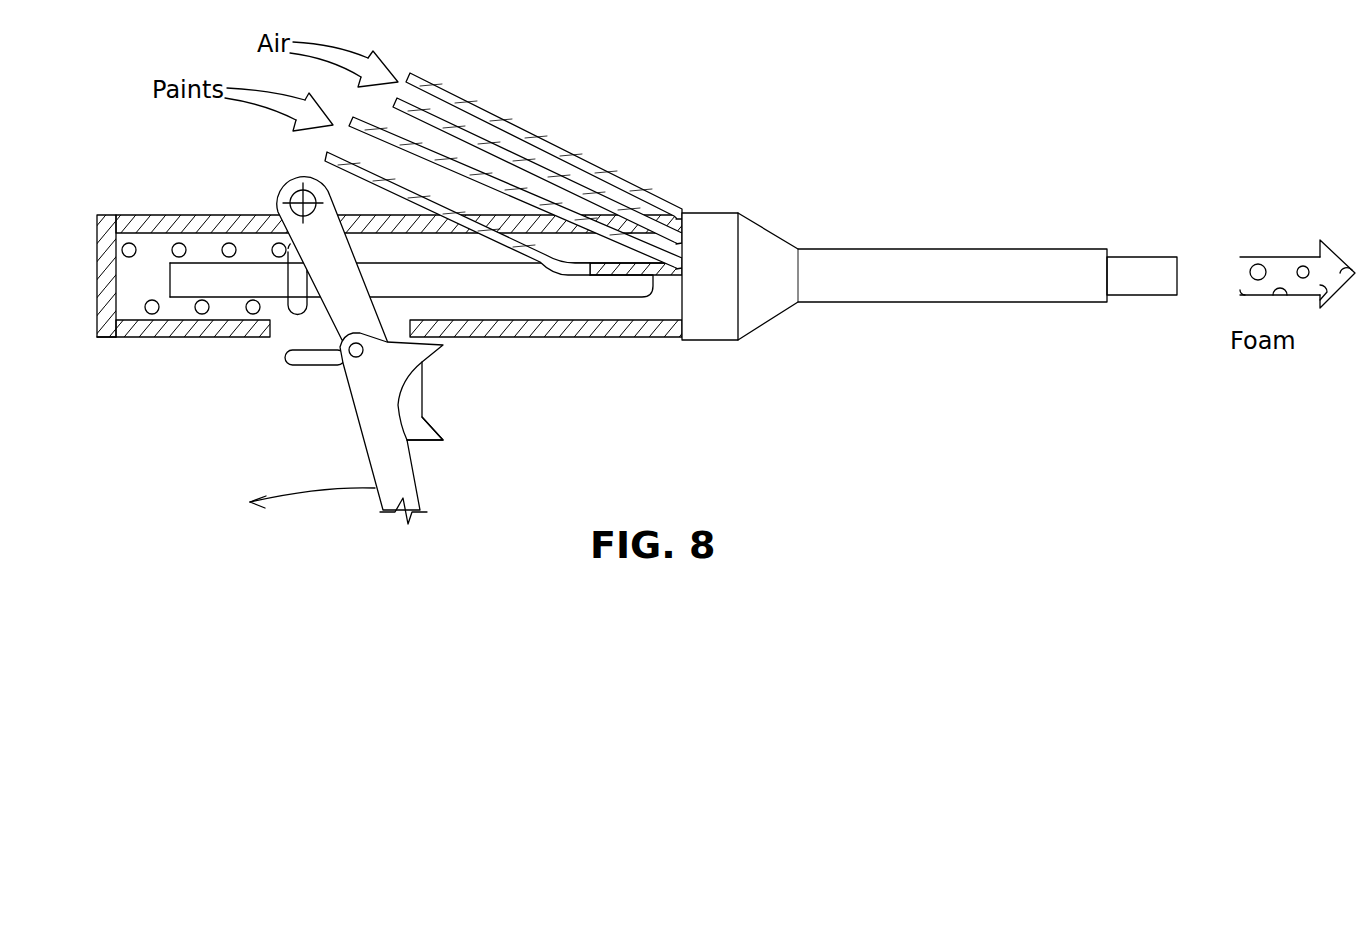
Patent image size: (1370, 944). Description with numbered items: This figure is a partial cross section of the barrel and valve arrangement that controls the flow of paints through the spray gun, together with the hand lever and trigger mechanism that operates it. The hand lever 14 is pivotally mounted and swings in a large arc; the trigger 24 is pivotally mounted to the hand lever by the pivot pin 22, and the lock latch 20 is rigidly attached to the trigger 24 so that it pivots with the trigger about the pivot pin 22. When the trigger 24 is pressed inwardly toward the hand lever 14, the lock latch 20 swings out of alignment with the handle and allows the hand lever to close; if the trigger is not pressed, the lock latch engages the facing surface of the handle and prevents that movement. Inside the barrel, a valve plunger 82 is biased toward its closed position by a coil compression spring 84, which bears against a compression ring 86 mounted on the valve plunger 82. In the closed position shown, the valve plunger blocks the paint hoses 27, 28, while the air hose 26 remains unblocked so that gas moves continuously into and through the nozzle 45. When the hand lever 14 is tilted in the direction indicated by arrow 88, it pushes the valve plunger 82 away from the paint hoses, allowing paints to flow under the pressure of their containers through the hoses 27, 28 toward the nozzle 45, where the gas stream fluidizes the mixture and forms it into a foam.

The hand lever 14 is at (387, 452).
The lock latch 20 is at (300, 365).
The pivot pin 22 is at (350, 358).
The trigger 24 is at (426, 422).
The air hose 26 is at (518, 126).
The paint hose 27 is at (327, 155).
The paint hose 28 is at (537, 171).
The nozzle 45 is at (912, 262).
The valve plunger 82 is at (580, 283).
The coil compression spring 84 is at (152, 314).
The compression ring 86 is at (290, 318).
The arrow 88 is at (327, 498).